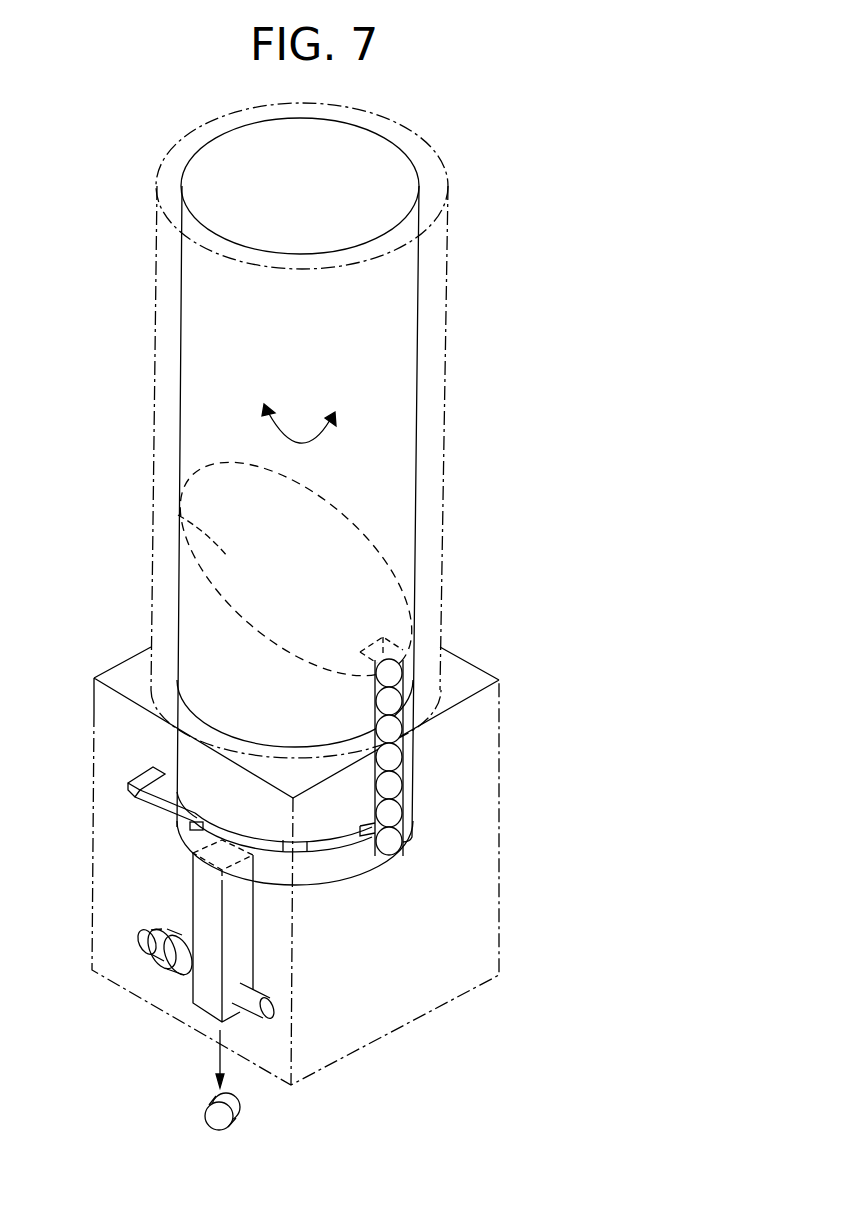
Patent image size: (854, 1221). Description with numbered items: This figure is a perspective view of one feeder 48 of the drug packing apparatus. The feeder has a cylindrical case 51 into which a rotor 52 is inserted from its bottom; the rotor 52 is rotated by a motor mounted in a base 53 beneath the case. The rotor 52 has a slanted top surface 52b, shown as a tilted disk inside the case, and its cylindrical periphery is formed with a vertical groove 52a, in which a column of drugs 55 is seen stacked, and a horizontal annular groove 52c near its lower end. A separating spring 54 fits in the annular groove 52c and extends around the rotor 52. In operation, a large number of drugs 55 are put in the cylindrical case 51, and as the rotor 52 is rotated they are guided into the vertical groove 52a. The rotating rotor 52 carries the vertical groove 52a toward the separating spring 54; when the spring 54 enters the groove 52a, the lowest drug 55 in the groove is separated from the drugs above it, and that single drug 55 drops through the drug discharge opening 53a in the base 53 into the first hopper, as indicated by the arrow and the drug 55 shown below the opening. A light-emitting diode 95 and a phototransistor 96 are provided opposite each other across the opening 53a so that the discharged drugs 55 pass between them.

The feeder 48 is at (440, 141).
The cylindrical case 51 is at (447, 333).
The rotor 52 is at (390, 540).
The vertical groove 52a is at (415, 613).
The slanted top surface 52b is at (178, 515).
The horizontal annular groove 52c is at (353, 833).
The base 53 is at (500, 877).
The drug discharge opening 53a is at (210, 985).
The separating spring 54 is at (140, 803).
The drugs 55 is at (387, 785).
The light-emitting diode 95 is at (183, 972).
The phototransistor 96 is at (282, 1005).